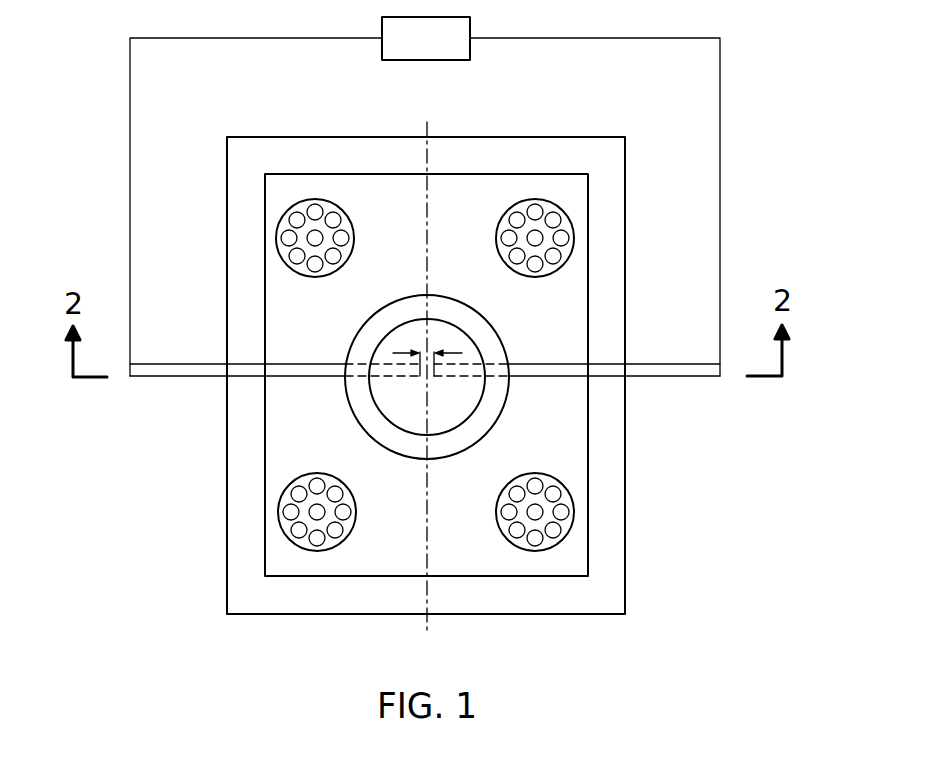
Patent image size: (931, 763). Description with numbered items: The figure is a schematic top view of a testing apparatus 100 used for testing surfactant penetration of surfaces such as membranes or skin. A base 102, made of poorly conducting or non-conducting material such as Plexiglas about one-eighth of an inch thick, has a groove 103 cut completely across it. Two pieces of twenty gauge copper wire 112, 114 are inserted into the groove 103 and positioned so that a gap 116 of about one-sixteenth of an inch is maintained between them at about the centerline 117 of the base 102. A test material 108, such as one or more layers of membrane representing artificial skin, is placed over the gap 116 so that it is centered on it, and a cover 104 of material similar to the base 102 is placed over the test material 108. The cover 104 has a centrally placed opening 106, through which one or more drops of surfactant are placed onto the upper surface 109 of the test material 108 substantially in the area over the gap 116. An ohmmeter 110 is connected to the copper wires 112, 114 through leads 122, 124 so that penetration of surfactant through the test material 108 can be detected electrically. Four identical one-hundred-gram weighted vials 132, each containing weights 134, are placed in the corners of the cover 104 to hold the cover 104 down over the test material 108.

The testing apparatus 100 is at (680, 460).
The base 102 is at (627, 576).
The groove 103 is at (296, 364).
The cover 104 is at (455, 577).
The centrally placed opening 106 is at (408, 433).
The test material 108 is at (352, 417).
The upper surface 109 is at (450, 402).
The ohmmeter 110 is at (463, 51).
The copper wire 112 is at (173, 363).
The copper wire 114 is at (679, 363).
The gap 116 is at (422, 347).
The centerline 117 is at (427, 225).
The lead 122 is at (130, 116).
The lead 124 is at (722, 116).
The weighted vial 132 is at (312, 199).
The weight 134 is at (335, 213).